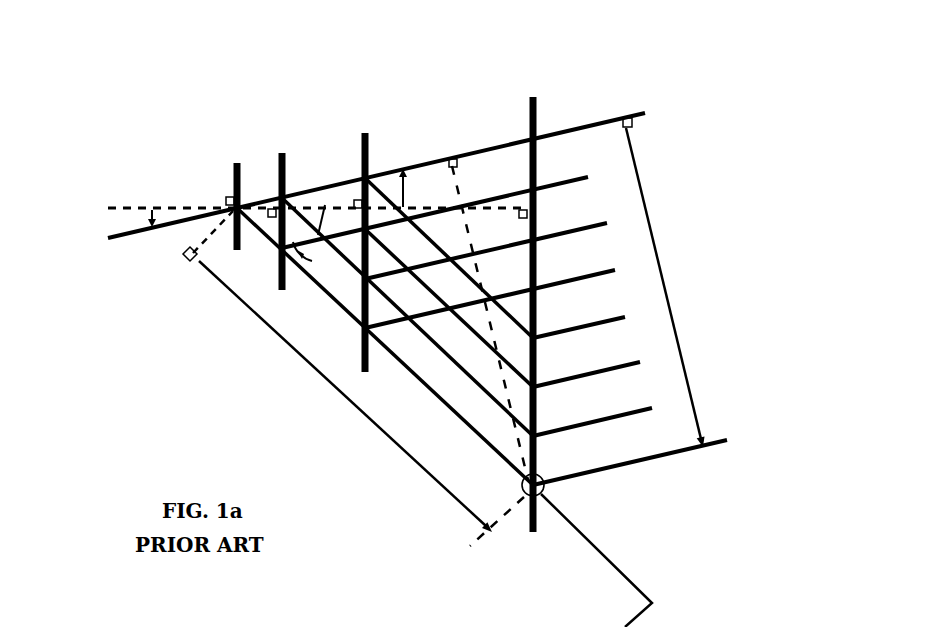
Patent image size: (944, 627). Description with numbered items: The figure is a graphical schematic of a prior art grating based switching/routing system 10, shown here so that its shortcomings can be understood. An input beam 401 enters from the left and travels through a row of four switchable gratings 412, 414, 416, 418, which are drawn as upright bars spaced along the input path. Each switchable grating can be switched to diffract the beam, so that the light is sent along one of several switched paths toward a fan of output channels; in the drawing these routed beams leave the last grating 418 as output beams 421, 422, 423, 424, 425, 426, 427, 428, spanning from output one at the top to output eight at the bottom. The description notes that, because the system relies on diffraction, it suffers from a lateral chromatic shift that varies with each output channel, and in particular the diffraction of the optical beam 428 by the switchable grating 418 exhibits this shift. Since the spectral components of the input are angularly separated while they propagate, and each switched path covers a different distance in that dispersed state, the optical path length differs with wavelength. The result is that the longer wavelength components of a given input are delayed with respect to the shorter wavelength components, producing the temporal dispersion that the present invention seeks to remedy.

The grating based switching/routing system 10 is at (164, 66).
The input beam 401 is at (132, 233).
The switchable grating 412 is at (245, 173).
The switchable grating 414 is at (288, 162).
The switchable grating 416 is at (372, 142).
The switchable grating 418 is at (540, 103).
The output beam 1 421 is at (583, 120).
The output beam 2 422 is at (564, 183).
The output beam 3 423 is at (576, 230).
The output beam 4 424 is at (587, 276).
The output beam 5 425 is at (599, 322).
The output beam 6 426 is at (611, 369).
The output beam 7 427 is at (621, 415).
The optical beam 428 is at (633, 461).